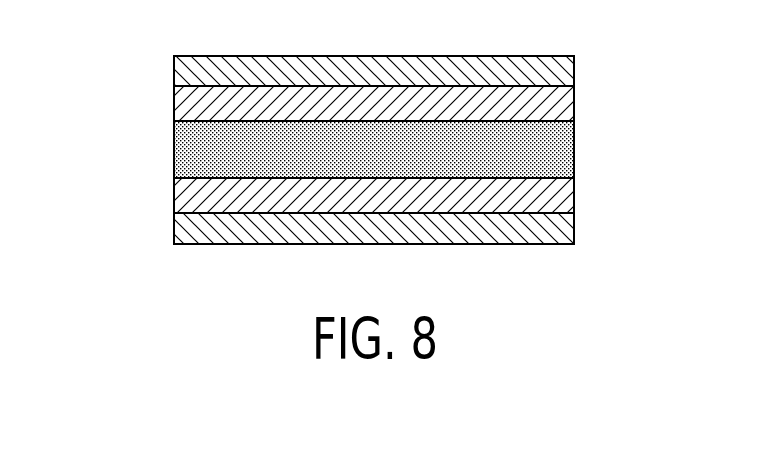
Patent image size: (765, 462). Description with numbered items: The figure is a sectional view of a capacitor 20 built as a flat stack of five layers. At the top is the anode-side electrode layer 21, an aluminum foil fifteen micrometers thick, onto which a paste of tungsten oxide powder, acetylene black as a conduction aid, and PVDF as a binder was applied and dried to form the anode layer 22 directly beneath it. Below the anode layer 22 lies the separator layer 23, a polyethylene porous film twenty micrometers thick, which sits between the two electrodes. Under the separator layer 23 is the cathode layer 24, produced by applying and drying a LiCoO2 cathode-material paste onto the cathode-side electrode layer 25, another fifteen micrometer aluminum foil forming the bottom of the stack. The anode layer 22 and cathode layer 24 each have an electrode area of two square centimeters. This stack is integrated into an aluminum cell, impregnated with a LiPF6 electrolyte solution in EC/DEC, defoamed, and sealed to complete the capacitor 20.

The capacitor 20 is at (160, 66).
The anode-side electrode layer 21 is at (550, 71).
The anode layer 22 is at (553, 101).
The separator layer 23 is at (550, 149).
The cathode layer 24 is at (549, 194).
The cathode-side electrode layer 25 is at (549, 227).